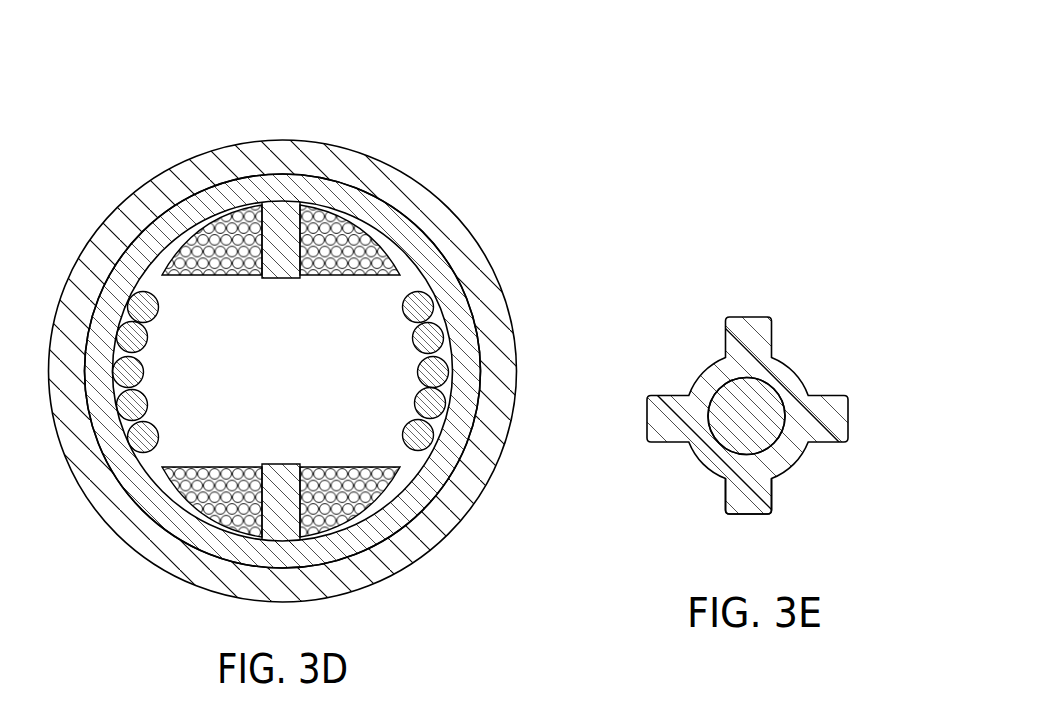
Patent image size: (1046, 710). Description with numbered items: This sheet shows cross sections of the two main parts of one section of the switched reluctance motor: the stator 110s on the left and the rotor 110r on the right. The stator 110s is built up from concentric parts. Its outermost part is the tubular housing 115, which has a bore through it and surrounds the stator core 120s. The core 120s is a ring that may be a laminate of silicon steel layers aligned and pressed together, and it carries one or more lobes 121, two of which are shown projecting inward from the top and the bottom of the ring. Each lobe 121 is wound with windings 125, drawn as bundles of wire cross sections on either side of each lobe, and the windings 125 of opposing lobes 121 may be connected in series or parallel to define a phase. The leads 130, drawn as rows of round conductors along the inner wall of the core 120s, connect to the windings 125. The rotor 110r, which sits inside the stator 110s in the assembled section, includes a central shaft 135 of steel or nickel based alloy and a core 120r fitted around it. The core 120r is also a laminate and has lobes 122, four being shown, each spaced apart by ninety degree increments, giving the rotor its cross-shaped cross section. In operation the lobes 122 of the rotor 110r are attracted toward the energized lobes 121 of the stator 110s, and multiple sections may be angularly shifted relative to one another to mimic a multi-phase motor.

In FIG. 3D, the stator 110s is at (296, 325).
In FIG. 3D, the housing 115 is at (207, 150).
In FIG. 3D, the core 120s is at (282, 312).
In FIG. 3D, the lobe 121 is at (281, 279).
In FIG. 3D, the windings 125 is at (365, 236).
In FIG. 3D, the leads 130 is at (430, 448).
In FIG. 3E, the rotor 110r is at (745, 333).
In FIG. 3E, the core 120r is at (700, 357).
In FIG. 3E, the lobe 122 is at (746, 514).
In FIG. 3E, the shaft 135 is at (757, 410).